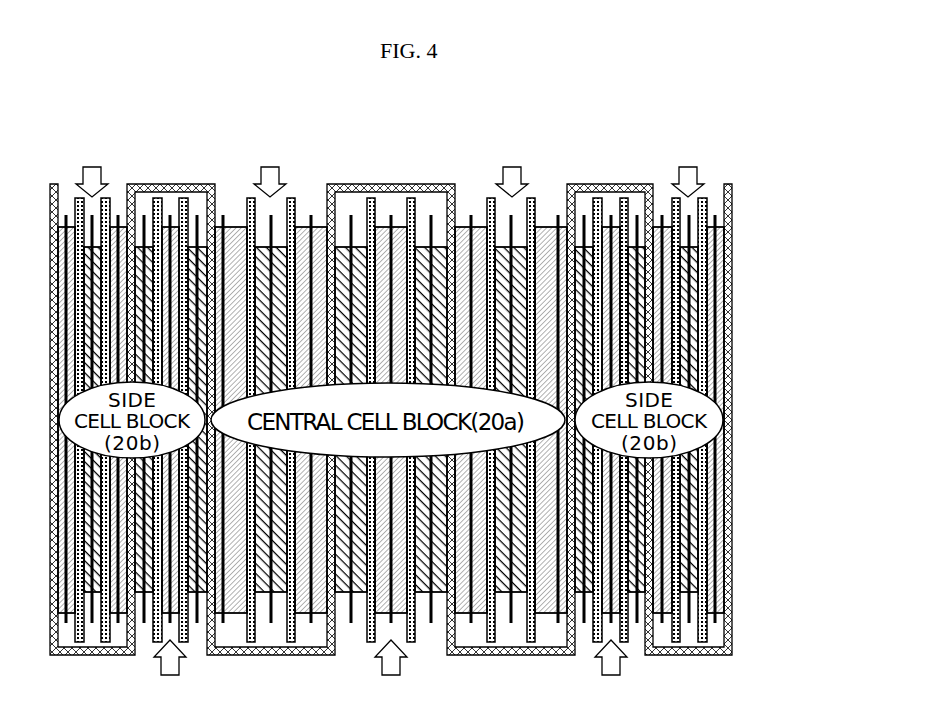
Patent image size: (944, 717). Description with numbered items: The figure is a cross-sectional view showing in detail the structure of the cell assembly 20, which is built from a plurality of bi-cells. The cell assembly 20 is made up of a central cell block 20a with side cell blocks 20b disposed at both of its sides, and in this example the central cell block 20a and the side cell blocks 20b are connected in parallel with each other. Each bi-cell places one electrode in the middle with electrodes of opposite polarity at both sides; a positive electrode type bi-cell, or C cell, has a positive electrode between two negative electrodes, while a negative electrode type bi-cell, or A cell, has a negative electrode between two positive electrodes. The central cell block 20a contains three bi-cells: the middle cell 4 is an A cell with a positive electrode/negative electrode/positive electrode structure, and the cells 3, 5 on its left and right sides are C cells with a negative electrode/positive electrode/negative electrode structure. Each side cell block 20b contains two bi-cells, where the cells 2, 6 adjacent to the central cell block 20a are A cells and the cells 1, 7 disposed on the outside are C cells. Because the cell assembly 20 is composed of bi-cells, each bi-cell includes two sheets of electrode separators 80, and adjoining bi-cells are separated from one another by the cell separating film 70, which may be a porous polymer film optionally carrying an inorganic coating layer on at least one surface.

The cell assembly 20 is at (177, 121).
The central cell block 20a is at (391, 419).
The side cell block 20b is at (391, 419).
The cell separating film 70 is at (732, 192).
The electrode separator 80 is at (703, 199).
The outer bi-cell of side cell block 1 is at (688, 169).
The inner bi-cell of side cell block 2 is at (611, 670).
The side bi-cell of central cell block 3 is at (512, 168).
The middle bi-cell of central cell block 4 is at (391, 670).
The side bi-cell of central cell block 5 is at (270, 168).
The inner bi-cell of side cell block 6 is at (170, 670).
The outer bi-cell of side cell block 7 is at (92, 169).